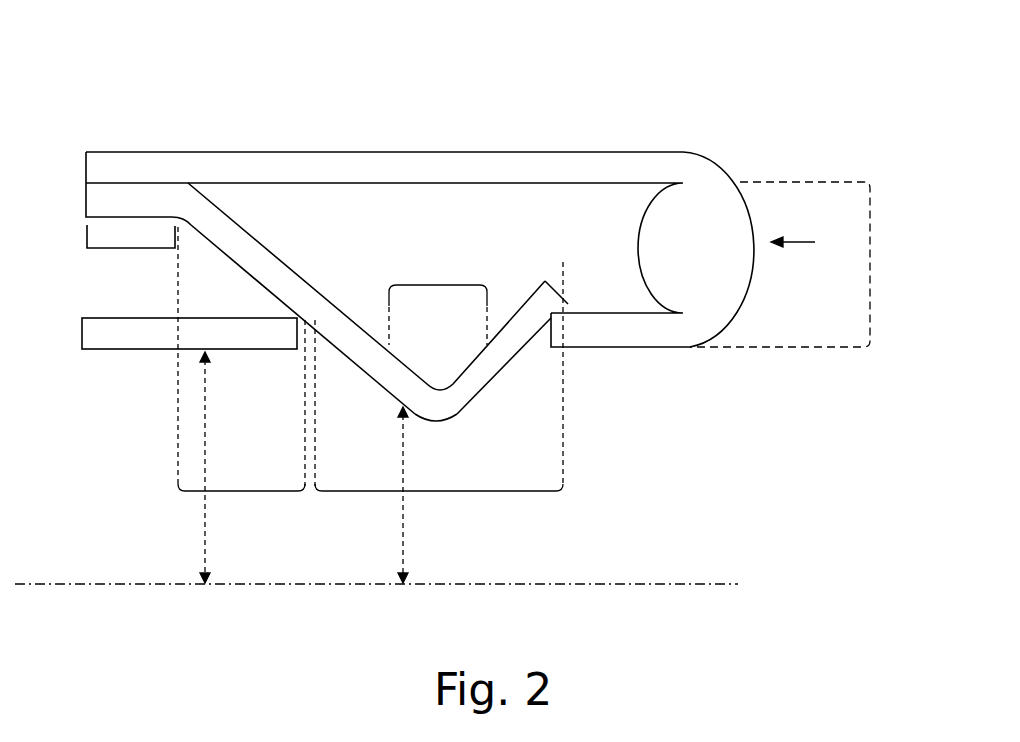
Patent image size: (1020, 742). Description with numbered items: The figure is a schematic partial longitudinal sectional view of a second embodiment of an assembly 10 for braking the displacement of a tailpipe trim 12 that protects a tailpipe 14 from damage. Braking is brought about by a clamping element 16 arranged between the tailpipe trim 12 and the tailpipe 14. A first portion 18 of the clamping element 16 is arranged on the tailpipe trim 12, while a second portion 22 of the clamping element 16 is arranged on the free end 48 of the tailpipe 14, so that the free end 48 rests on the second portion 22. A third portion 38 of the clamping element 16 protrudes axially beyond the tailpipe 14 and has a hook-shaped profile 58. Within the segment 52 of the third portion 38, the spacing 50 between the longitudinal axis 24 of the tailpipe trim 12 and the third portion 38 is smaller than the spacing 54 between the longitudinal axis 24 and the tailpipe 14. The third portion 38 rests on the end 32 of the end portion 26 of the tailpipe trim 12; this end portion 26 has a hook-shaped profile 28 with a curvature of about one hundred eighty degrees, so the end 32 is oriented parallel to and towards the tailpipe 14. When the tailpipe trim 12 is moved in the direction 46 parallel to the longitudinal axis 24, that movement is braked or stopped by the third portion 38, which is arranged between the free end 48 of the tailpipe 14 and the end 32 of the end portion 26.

The assembly 10 is at (788, 90).
The tailpipe trim 12 is at (317, 158).
The tailpipe 14 is at (92, 343).
The clamping element 16 is at (254, 252).
The first portion 18 is at (131, 249).
The second portion 22 is at (278, 491).
The longitudinal axis 24 is at (653, 583).
The end portion 26 is at (870, 262).
The hook-shaped profile 28 is at (756, 247).
The end 32 is at (564, 302).
The third portion 38 is at (527, 491).
The direction 46 is at (815, 242).
The free end 48 is at (295, 317).
The spacing 50 is at (403, 508).
The segment 52 is at (438, 285).
The spacing 54 is at (205, 400).
The hook-shaped profile 58 is at (447, 418).